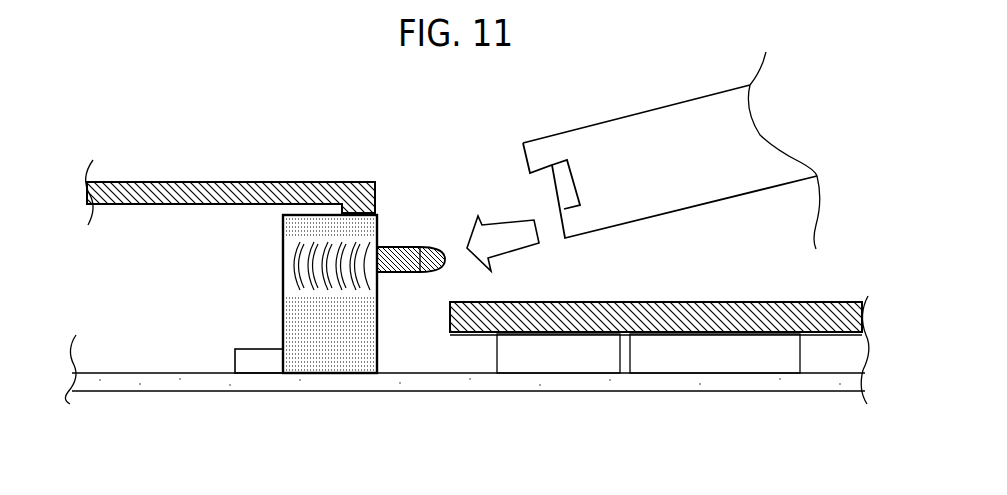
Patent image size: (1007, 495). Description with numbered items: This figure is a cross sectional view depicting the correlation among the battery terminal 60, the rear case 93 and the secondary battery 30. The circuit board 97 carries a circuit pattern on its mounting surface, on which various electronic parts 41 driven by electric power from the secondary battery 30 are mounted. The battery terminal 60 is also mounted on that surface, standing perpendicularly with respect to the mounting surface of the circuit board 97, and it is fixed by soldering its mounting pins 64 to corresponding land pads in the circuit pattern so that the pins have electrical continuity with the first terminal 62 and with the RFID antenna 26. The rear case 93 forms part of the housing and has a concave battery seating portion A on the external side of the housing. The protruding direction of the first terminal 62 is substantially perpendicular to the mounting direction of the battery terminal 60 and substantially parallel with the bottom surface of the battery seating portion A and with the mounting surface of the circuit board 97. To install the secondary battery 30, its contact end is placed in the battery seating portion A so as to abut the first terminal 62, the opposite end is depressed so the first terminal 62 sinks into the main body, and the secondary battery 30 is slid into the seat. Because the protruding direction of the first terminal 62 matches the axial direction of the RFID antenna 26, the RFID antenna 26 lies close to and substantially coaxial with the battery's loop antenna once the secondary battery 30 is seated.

The rear case 93 is at (280, 185).
The RFID antenna 26 is at (378, 242).
The first terminal 62 is at (379, 244).
The secondary battery 30 is at (550, 182).
The battery seating portion A is at (652, 300).
The electronic parts 41 is at (556, 355).
The battery terminal 60 is at (283, 326).
The circuit board 97 is at (210, 378).
The mounting pin 64 is at (260, 360).